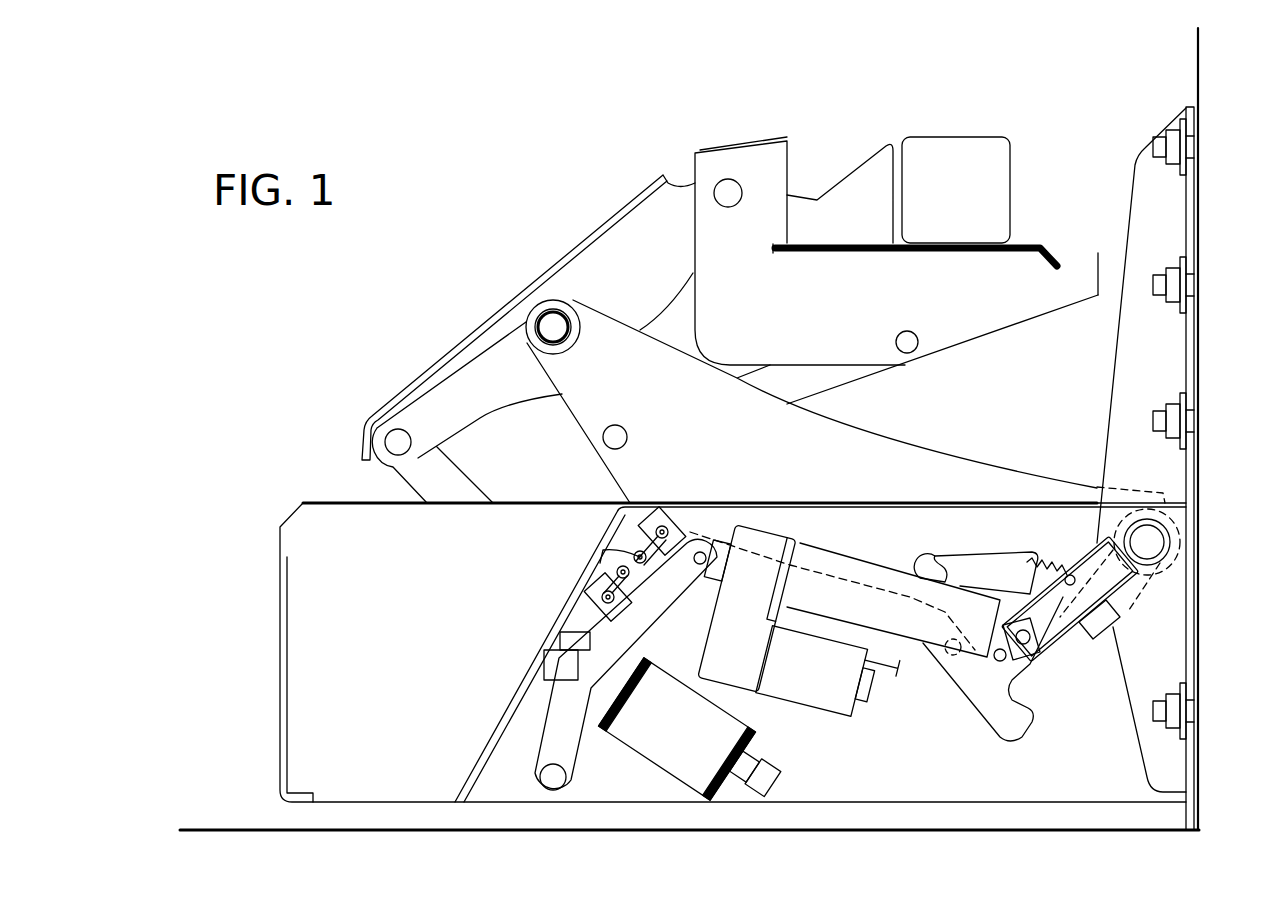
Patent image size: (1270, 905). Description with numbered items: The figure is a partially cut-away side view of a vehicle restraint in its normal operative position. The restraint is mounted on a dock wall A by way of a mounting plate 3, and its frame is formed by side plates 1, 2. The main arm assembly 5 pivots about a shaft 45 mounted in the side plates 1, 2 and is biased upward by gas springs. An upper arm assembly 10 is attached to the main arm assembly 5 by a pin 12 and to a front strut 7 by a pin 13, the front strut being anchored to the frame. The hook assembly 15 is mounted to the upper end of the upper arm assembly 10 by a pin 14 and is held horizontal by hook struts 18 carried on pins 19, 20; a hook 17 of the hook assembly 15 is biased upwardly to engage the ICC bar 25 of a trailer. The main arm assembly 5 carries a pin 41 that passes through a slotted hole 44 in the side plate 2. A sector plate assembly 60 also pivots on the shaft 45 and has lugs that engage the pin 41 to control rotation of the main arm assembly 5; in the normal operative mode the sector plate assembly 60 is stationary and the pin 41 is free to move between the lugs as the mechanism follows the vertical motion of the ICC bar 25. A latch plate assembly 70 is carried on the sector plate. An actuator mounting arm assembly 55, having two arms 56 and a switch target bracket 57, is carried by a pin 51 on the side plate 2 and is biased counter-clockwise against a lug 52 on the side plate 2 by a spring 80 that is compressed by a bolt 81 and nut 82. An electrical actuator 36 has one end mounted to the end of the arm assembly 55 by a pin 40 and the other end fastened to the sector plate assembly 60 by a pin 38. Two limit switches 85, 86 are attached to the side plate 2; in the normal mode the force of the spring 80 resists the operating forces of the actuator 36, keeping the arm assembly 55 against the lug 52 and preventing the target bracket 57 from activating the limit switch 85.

The dock wall A is at (1197, 50).
The frame side plate 1 is at (690, 652).
The frame side plate 2 is at (323, 590).
The mounting plate 3 is at (1182, 110).
The main arm assembly 5 is at (940, 454).
The front strut 7 is at (465, 470).
The upper arm assembly 10 is at (568, 253).
The pin 12 is at (537, 325).
The pin 13 is at (396, 442).
The pin 14 is at (728, 193).
The hook assembly 15 is at (1090, 253).
The hook 17 is at (848, 185).
The hook strut 18 is at (835, 385).
The pin 19 is at (913, 353).
The pin 20 is at (980, 247).
The ICC bar 25 is at (983, 150).
The electrical actuator 36 is at (790, 535).
The pin 38 is at (1031, 641).
The pin 40 is at (706, 552).
The pin 41 is at (945, 665).
The slotted hole 44 is at (982, 702).
The shaft 45 is at (1150, 543).
The pin 51 is at (567, 792).
The lug 52 is at (562, 638).
The actuator mounting arm assembly 55 is at (543, 663).
The arm 56 is at (548, 720).
The switch target bracket 57 is at (632, 556).
The sector plate assembly 60 is at (1035, 688).
The latch plate assembly 70 is at (990, 565).
The spring 80 is at (700, 774).
The bolt 81 is at (548, 660).
The nut 82 is at (740, 790).
The limit switch 85 is at (640, 520).
The limit switch 86 is at (601, 596).